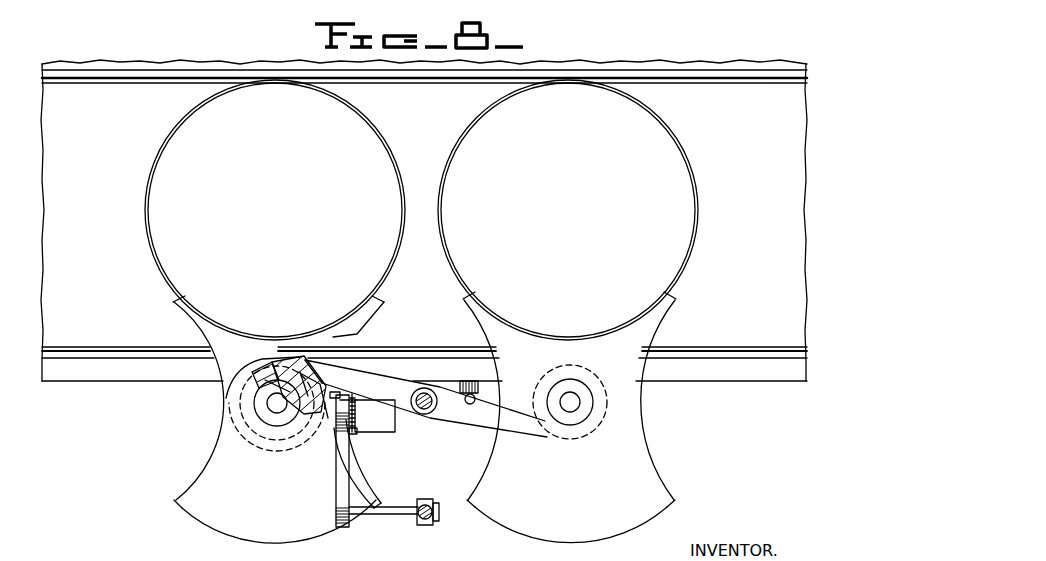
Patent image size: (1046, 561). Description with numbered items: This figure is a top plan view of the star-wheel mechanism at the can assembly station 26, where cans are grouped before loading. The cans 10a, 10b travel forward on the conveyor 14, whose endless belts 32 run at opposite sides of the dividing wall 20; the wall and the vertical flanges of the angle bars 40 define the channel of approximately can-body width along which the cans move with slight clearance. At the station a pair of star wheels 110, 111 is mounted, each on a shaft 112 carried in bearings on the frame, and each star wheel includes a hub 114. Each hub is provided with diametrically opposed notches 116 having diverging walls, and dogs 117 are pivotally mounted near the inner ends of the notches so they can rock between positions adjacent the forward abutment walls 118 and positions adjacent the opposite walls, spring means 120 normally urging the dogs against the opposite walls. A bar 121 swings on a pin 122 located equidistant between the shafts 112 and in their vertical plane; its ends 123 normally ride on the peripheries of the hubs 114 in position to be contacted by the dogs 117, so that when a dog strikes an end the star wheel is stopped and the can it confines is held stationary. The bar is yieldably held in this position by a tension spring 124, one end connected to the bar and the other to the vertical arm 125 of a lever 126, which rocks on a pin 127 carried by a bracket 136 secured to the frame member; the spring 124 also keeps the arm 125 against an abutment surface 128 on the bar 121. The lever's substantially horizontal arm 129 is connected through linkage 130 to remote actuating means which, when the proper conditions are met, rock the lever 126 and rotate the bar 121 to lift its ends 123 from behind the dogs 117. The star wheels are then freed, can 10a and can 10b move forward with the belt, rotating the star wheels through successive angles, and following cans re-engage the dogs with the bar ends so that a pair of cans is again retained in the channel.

The dividing wall 20 is at (73, 62).
The conveyor 14 is at (90, 323).
The endless belts 32 is at (117, 335).
The angle bars 40 is at (140, 372).
The can 10a is at (642, 138).
The can 10b is at (352, 138).
The star wheel 110 is at (212, 462).
The star wheel 111 is at (640, 463).
The shaft 112 is at (277, 403).
The hub 114 is at (310, 420).
The notches 116 is at (296, 370).
The dogs 117 is at (272, 398).
The forward abutment walls 118 is at (245, 375).
The spring means 120 is at (268, 388).
The bar 121 is at (437, 423).
The pin 122 is at (423, 416).
The ends 123 is at (305, 370).
The tension spring 124 is at (347, 407).
The vertical arm 125 is at (356, 400).
The lever 126 is at (350, 448).
The pin 127 is at (337, 425).
The abutment surface 128 is at (343, 400).
The horizontal arm 129 is at (345, 506).
The linkage 130 is at (425, 525).
The bracket 136 is at (386, 426).
The can assembly station 26 is at (428, 455).